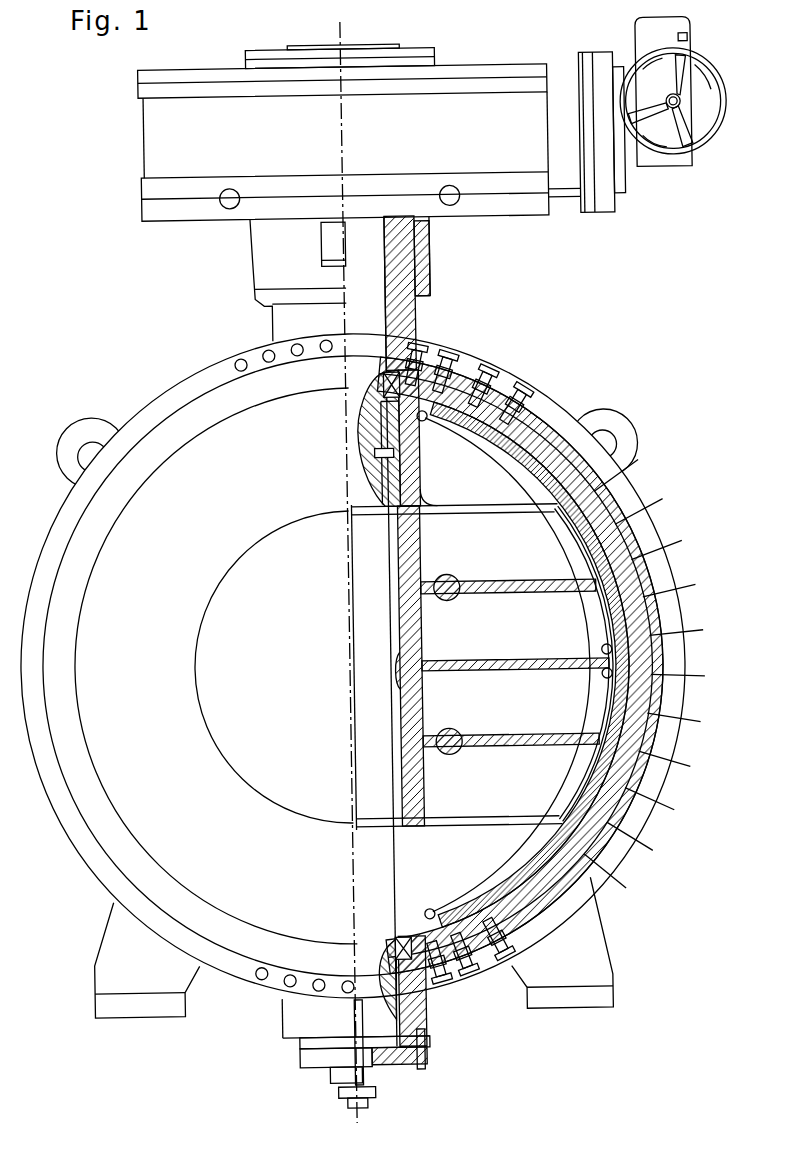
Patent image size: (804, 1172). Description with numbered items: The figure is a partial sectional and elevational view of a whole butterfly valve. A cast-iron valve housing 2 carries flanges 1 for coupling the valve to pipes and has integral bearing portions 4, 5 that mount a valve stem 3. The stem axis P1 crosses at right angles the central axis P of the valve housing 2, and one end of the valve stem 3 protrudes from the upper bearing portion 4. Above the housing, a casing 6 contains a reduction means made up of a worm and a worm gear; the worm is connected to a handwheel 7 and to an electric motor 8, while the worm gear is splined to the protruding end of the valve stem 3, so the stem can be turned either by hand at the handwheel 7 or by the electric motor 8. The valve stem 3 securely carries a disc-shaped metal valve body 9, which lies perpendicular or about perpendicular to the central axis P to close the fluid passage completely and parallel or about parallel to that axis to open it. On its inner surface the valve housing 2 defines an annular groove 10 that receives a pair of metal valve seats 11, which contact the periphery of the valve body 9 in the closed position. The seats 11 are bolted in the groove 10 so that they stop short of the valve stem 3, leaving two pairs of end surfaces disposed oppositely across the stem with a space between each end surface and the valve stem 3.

The flanges 1 is at (194, 382).
The valve housing 2 is at (652, 636).
The valve stem 3 is at (360, 853).
The bearing portion 4 is at (240, 267).
The bearing portion 5 is at (277, 1076).
The casing 6 is at (569, 196).
The handwheel 7 is at (711, 154).
The electric motor 8 is at (646, 32).
The valve body 9 is at (499, 468).
The annular groove 10 is at (613, 568).
The valve seats 11 is at (597, 522).
The central axis P is at (357, 668).
The axis of valve stem P1 is at (353, 121).